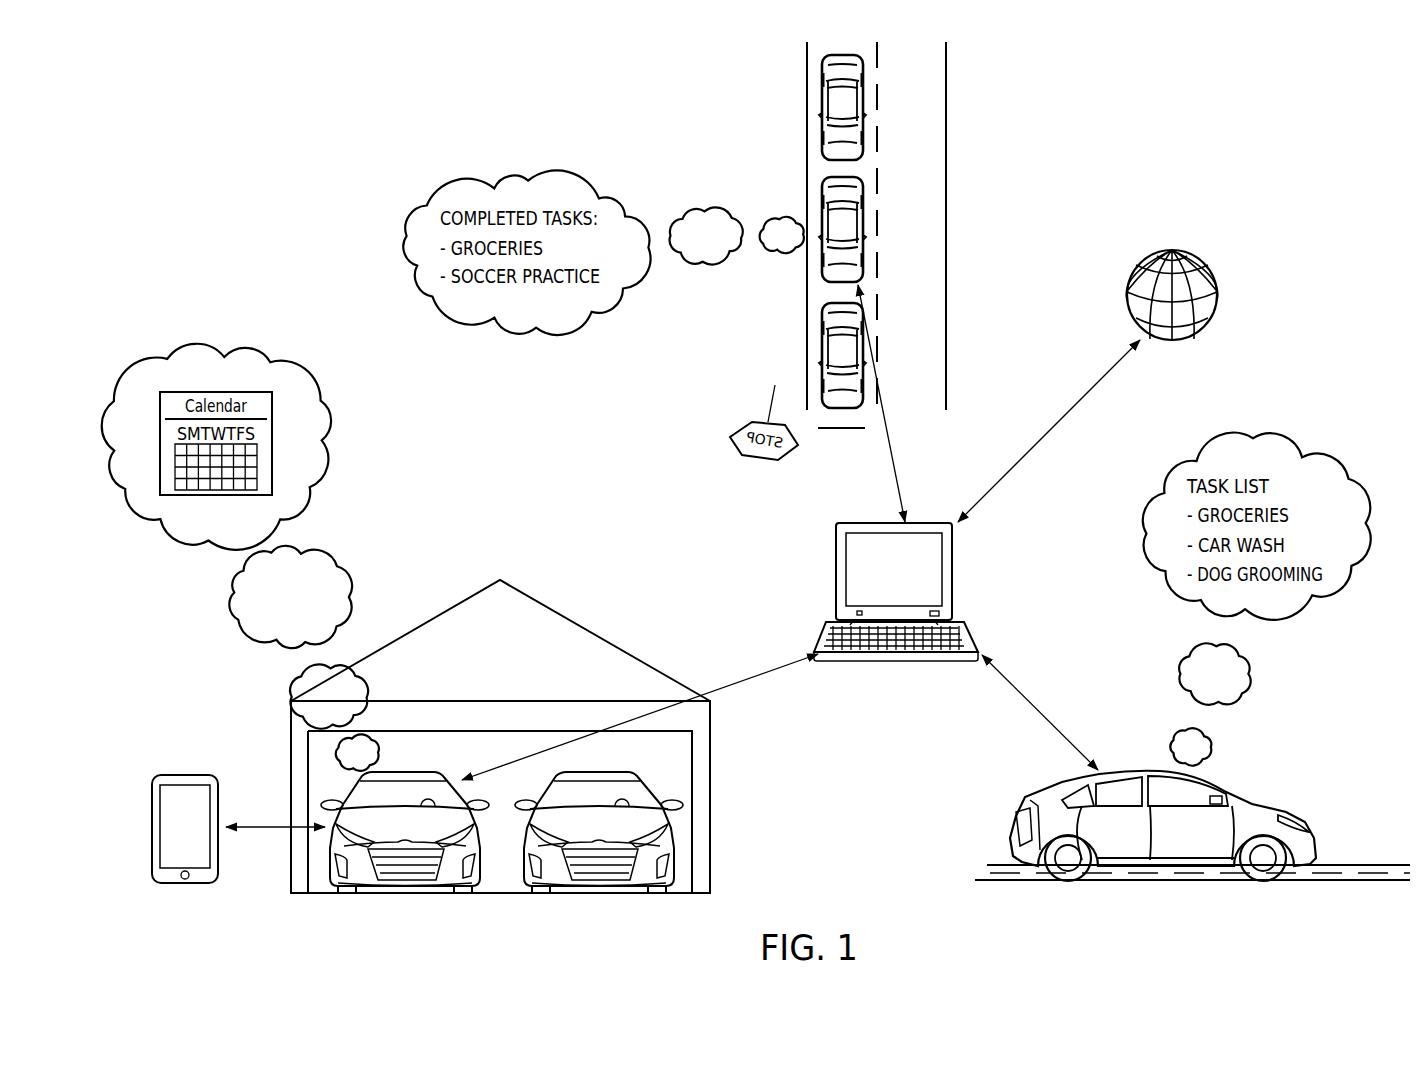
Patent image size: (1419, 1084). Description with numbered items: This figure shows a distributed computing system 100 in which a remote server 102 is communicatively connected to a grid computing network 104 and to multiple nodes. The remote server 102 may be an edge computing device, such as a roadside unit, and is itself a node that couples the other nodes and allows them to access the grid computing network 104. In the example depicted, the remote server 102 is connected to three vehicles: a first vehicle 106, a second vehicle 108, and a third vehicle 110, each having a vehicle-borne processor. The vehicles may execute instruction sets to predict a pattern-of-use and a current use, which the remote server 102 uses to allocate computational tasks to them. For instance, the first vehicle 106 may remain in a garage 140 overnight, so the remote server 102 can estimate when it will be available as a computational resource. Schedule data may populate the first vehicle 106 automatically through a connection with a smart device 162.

The distributed computing system 100 is at (1196, 146).
The remote server 102 is at (953, 579).
The grid computing network 104 is at (1176, 248).
The first vehicle 106 is at (343, 886).
The second vehicle 108 is at (860, 231).
The third vehicle 110 is at (1277, 812).
The garage 140 is at (606, 640).
The smart device 162 is at (182, 775).